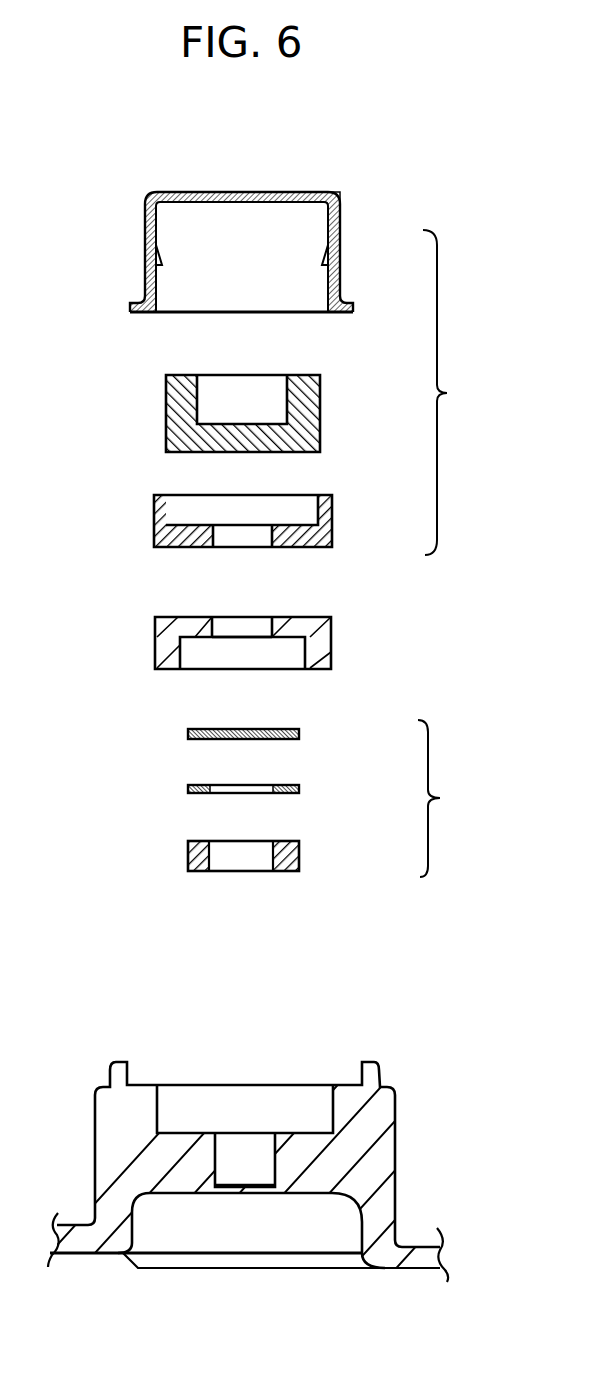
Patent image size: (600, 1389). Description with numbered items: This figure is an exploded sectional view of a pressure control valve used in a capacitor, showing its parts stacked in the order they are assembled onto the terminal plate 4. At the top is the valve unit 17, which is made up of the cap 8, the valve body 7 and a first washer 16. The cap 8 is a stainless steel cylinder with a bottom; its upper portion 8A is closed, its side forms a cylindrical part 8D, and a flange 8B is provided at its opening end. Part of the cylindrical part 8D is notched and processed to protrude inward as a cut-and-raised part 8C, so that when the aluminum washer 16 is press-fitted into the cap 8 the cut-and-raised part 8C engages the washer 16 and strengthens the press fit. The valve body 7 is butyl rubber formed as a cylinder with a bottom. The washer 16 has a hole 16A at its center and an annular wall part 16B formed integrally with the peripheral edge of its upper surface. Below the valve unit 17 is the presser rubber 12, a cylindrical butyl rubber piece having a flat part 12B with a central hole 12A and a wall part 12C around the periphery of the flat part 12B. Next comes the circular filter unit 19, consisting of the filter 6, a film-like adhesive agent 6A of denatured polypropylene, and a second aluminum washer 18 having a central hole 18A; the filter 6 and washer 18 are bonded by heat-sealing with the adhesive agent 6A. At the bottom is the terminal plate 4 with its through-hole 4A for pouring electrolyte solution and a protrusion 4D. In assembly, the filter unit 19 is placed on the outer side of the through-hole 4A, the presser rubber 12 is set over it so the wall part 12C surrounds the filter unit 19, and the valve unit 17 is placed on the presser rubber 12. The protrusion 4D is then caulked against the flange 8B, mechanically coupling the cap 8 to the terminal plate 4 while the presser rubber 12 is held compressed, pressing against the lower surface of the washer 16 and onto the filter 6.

The terminal plate 4 is at (100, 1277).
The through-hole 4A is at (237, 1165).
The protrusion 4D is at (122, 1070).
The filter 6 is at (302, 734).
The adhesive agent 6A is at (302, 790).
The valve body 7 is at (318, 415).
The cap 8 is at (242, 185).
The top portion of cap 8A is at (331, 195).
The flange 8B is at (348, 298).
The cut-and-raised part 8C is at (160, 264).
The cylindrical part 8D is at (148, 233).
The presser rubber 12 is at (340, 642).
The hole 12A is at (230, 628).
The flat part 12B is at (298, 622).
The wall part 12C is at (160, 668).
The washer 16 is at (332, 530).
The hole 16A is at (240, 535).
The annular wall part 16B is at (327, 513).
The valve unit 17 is at (454, 392).
The washer 18 is at (302, 858).
The hole 18A is at (242, 855).
The filter unit 19 is at (449, 798).